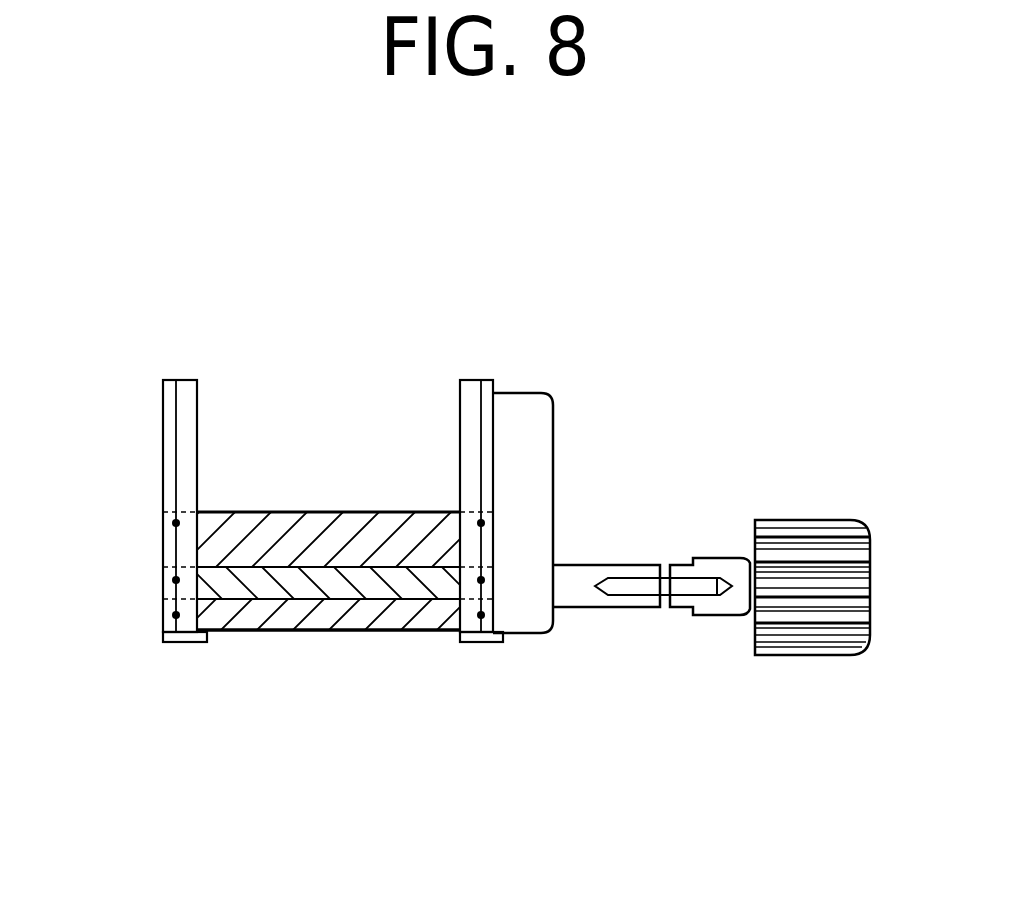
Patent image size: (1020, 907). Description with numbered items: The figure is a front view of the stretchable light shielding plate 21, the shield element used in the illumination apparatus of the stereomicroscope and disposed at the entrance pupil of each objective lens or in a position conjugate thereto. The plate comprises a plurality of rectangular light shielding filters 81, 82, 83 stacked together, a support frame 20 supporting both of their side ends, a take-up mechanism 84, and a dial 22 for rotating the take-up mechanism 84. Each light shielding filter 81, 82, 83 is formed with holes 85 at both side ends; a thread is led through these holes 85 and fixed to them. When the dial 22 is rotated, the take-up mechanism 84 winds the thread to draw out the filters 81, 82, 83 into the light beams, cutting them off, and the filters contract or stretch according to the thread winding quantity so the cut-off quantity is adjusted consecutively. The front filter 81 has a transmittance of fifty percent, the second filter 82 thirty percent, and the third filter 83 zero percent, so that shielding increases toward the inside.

The support frame 20 is at (183, 380).
The stretchable light shielding plate 21 is at (765, 275).
The dial 22 is at (805, 520).
The light shielding filter 81 is at (335, 512).
The second light shielding filter 82 is at (277, 587).
The third light shielding filter 83 is at (403, 615).
The take-up mechanism 84 is at (533, 423).
The holes 85 is at (176, 523).